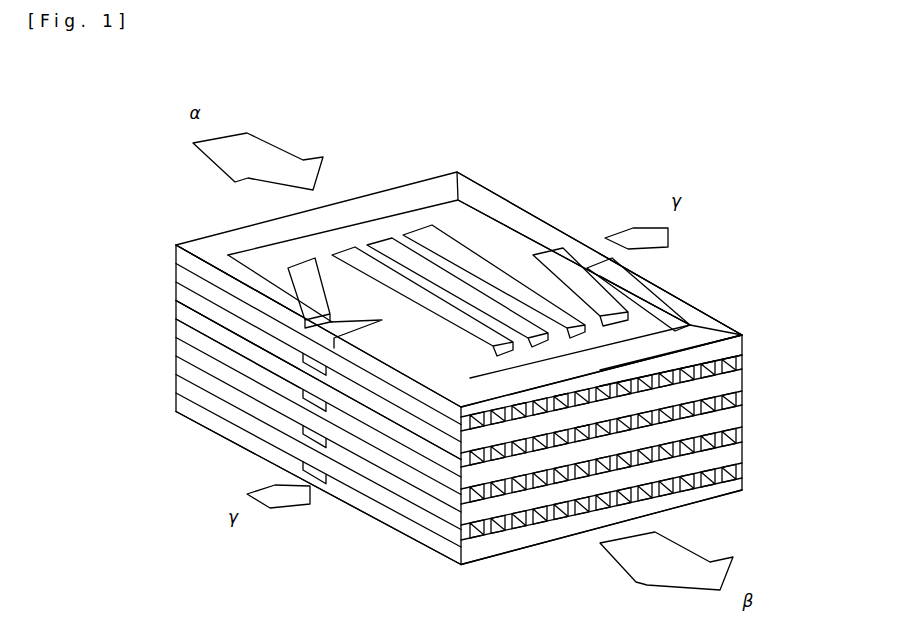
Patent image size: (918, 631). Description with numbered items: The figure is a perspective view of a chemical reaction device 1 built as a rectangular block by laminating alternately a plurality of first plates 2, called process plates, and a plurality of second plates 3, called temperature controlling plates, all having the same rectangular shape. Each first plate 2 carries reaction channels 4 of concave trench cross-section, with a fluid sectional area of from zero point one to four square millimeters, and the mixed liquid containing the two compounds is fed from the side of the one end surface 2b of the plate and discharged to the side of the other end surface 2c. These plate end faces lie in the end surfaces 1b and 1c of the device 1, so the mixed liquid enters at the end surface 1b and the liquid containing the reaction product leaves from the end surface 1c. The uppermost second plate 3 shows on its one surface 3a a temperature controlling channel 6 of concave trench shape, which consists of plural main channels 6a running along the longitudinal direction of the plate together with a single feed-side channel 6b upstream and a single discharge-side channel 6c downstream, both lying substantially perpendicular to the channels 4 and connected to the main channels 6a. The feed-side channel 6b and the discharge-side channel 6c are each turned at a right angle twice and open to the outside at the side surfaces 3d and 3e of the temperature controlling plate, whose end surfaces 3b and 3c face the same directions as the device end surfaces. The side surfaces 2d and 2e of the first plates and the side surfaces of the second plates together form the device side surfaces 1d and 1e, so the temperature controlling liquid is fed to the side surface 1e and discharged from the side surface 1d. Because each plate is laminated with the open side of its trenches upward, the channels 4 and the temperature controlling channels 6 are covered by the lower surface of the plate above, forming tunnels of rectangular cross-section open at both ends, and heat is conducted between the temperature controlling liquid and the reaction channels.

The chemical reaction device 1 is at (540, 112).
The end surface of chemical reaction device 1b is at (100, 225).
The end surface of first plate 2b is at (190, 242).
The end surface of second plate 3b is at (176, 246).
The surface of second plate 3a is at (387, 196).
The temperature controlling channel 6 is at (600, 197).
The main channel 6a is at (473, 276).
The feed-side channel 6b is at (292, 268).
The discharge-side channel 6c is at (567, 262).
The side surface of chemical reaction device 1e is at (692, 275).
The side surface of first plate 2e is at (770, 233).
The side surface of second plate 3e is at (699, 269).
The end surface of chemical reaction device 1c is at (740, 252).
The end surface of second plate 3c is at (692, 348).
The end surface of first plate 2c is at (725, 357).
The second plate (temperature controlling plate) 3 is at (746, 485).
The first plate (process plate) 2 is at (746, 470).
The side surface of chemical reaction device 1d is at (110, 443).
The side surface of first plate 2d is at (236, 318).
The side surface of second plate 3d is at (262, 346).
The channel having concave trench cross-sectional shape 4 is at (576, 433).